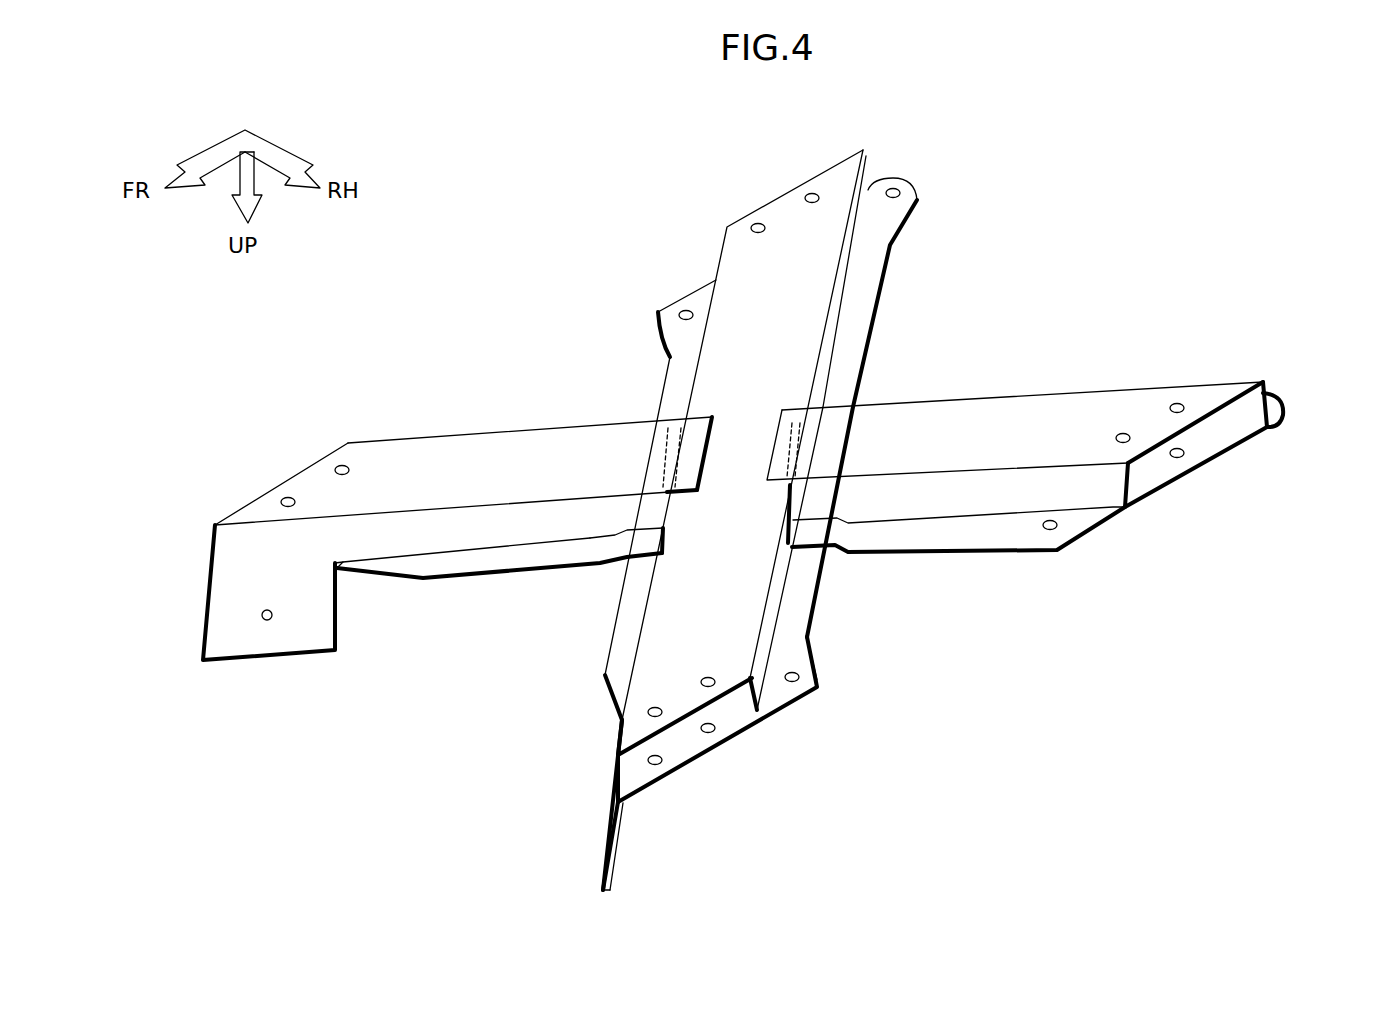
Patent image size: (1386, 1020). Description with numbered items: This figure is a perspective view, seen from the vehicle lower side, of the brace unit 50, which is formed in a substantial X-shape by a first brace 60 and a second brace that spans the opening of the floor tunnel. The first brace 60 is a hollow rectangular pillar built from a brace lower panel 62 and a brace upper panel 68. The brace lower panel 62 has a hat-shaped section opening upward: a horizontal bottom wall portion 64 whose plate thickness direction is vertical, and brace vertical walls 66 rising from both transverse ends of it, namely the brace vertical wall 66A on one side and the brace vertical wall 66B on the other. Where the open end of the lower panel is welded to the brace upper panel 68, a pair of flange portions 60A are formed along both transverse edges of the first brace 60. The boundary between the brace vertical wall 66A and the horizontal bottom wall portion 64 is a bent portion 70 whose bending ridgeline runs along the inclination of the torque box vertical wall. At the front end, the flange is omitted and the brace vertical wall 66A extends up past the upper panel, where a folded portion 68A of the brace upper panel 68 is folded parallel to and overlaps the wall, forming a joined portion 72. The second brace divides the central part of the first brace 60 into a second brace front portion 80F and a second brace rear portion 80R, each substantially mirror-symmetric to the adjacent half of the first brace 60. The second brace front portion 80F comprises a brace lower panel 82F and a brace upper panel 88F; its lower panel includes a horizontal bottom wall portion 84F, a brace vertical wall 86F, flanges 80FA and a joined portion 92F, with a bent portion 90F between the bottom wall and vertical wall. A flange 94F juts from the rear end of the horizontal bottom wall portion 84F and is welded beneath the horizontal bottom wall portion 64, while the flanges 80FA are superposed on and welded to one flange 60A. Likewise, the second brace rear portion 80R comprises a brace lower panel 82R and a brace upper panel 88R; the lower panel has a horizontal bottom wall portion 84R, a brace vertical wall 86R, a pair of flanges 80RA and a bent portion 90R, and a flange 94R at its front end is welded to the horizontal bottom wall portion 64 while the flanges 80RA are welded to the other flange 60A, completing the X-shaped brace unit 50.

The brace unit 50 is at (1047, 196).
The first brace 60 is at (828, 775).
The flange portion 60A is at (658, 312).
The brace lower panel 62 is at (705, 727).
The horizontal bottom wall portion 64 is at (735, 640).
The brace vertical wall 66 is at (615, 777).
The brace vertical wall 66A is at (618, 735).
The brace vertical wall 66B is at (782, 598).
The brace upper panel 68 is at (730, 745).
The folded portion 68A is at (628, 830).
The bent portion 70 is at (605, 678).
The joined portion 72 is at (598, 770).
The second brace front portion 80F is at (445, 440).
The flange 80FA is at (540, 548).
The brace lower panel 82F is at (423, 497).
The horizontal bottom wall portion 84F is at (508, 448).
The brace vertical wall 86F is at (385, 530).
The brace upper panel 88F is at (375, 578).
The bent portion 90F is at (270, 520).
The joined portion 92F is at (255, 635).
The flange 94F is at (708, 420).
The second brace rear portion 80R is at (1308, 548).
The flange 80RA is at (1272, 408).
The brace lower panel 82R is at (1265, 415).
The horizontal bottom wall portion 84R is at (982, 418).
The brace vertical wall 86R is at (915, 485).
The brace upper panel 88R is at (1175, 495).
The bent portion 90R is at (1048, 435).
The flange 94R is at (770, 470).